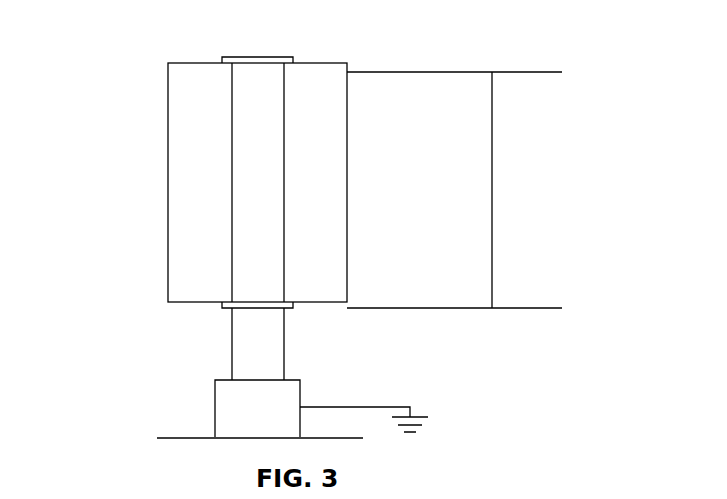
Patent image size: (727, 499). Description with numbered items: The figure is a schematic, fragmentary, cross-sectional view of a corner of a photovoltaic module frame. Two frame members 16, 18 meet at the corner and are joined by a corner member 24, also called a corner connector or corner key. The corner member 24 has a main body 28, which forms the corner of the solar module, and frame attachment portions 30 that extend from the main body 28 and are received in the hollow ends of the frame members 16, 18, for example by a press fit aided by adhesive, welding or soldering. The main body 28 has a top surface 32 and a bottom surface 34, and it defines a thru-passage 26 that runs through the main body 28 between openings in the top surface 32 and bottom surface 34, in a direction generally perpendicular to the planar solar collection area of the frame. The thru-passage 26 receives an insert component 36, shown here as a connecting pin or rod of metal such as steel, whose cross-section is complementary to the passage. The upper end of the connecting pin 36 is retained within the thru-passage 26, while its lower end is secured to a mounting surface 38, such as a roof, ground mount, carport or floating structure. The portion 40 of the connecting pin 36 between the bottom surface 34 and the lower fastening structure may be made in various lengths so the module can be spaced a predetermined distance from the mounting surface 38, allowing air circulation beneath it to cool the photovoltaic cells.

The frame member 16 is at (461, 159).
The frame member 18 is at (461, 159).
The corner member 24 is at (145, 67).
The thru-passage 26 is at (234, 138).
The main body 28 is at (167, 208).
The frame attachment portion 30 is at (493, 182).
The top surface 32 is at (311, 63).
The bottom surface 34 is at (307, 303).
The insert component 36 is at (284, 148).
The mounting surface 38 is at (200, 439).
The portion of the connecting pin 40 is at (232, 338).